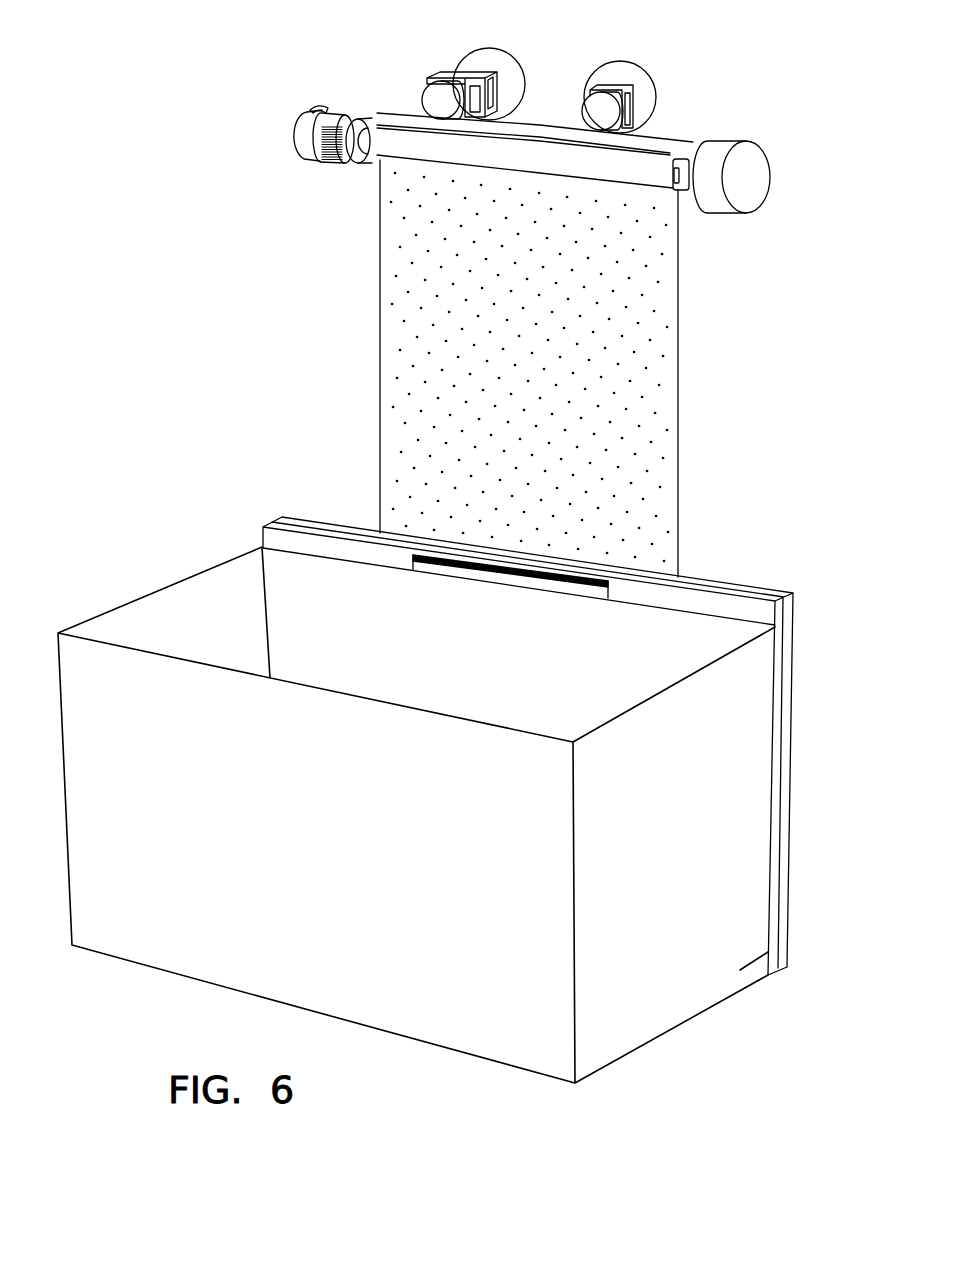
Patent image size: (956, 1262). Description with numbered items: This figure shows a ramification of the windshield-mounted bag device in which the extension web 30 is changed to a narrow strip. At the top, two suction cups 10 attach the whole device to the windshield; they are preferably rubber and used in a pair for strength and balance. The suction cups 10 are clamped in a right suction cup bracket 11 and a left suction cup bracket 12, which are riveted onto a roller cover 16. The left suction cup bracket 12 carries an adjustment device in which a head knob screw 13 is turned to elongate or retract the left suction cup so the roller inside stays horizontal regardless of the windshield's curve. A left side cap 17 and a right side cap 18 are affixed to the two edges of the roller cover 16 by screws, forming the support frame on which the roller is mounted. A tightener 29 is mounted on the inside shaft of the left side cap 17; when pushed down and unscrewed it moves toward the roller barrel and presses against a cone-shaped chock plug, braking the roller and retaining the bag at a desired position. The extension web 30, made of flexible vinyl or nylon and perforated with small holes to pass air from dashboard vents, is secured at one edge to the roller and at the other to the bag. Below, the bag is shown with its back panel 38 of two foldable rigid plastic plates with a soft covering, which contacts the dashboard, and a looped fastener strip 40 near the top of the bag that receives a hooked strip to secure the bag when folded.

The suction cup 10 is at (612, 73).
The right suction cup bracket 11 is at (647, 95).
The left suction cup bracket 12 is at (453, 73).
The adjustment head knob with screw 13 is at (434, 100).
The roller cover 16 is at (668, 142).
The left side cap 17 is at (303, 123).
The right side cap 18 is at (762, 177).
The tightener 29 is at (343, 120).
The extension web 30 is at (388, 268).
The bag back panel 38 is at (793, 694).
The looped Velcro strip 40 is at (469, 572).